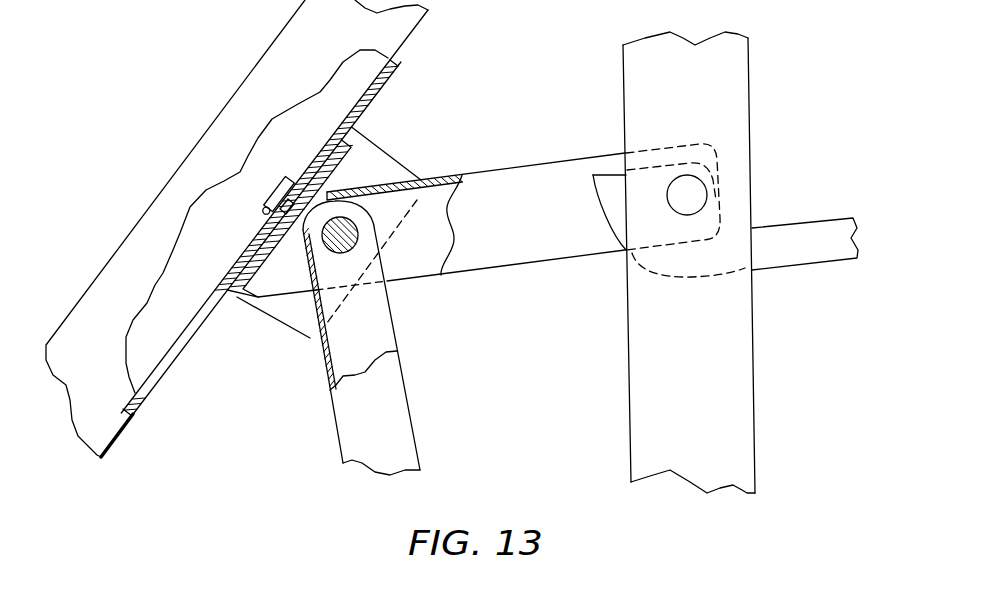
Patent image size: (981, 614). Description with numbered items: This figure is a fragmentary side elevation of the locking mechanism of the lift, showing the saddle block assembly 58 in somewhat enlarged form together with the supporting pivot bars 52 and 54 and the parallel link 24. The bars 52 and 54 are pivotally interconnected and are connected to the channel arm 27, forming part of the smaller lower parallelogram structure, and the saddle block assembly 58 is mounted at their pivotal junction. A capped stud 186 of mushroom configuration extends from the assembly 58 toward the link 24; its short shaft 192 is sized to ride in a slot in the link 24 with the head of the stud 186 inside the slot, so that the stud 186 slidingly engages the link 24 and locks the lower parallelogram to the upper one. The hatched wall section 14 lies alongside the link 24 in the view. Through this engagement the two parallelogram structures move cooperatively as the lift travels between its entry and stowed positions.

The parallel link 24 is at (243, 95).
The wall panel section 14 is at (403, 107).
The capped stud 186 is at (262, 193).
The short shaft 192 is at (279, 208).
The saddle block assembly 58 is at (272, 315).
The pivot bar 54 is at (526, 177).
The pivot bar 52 is at (400, 390).
The channel arm 27 is at (745, 368).